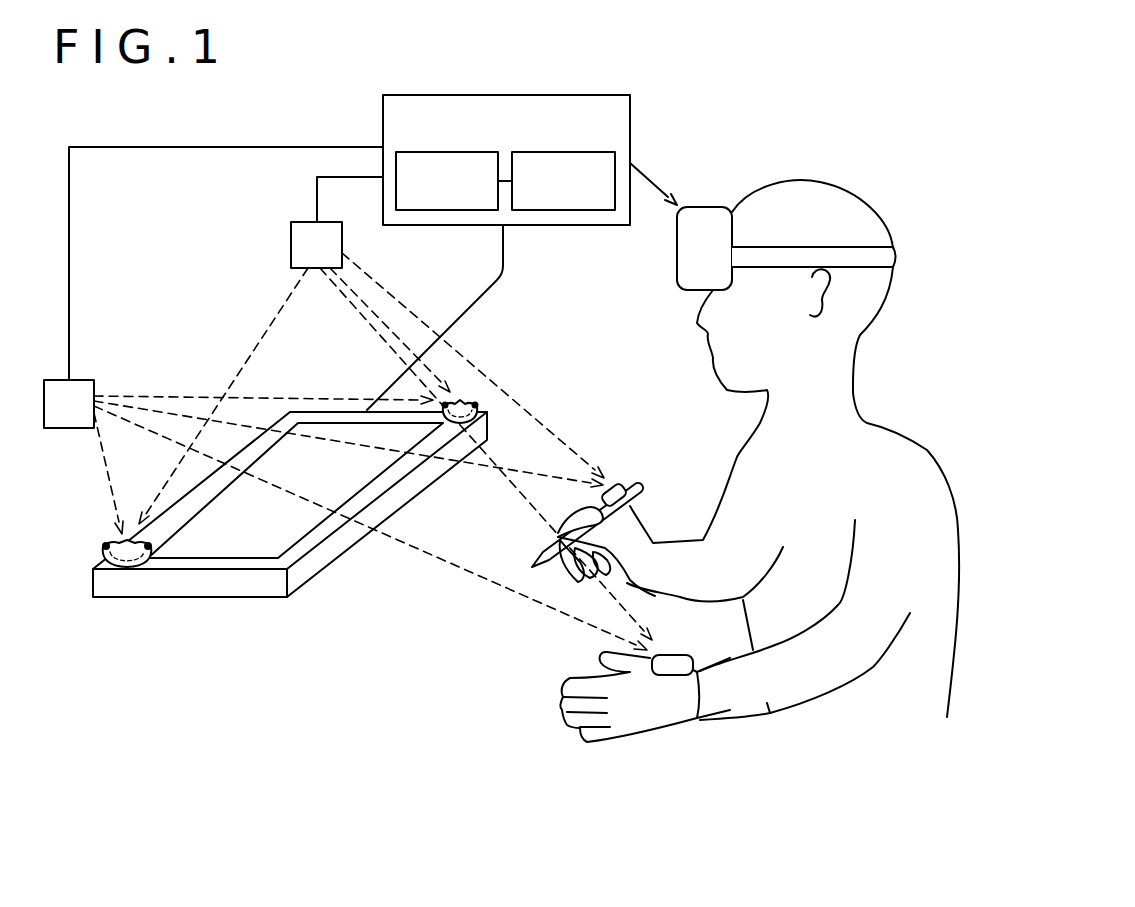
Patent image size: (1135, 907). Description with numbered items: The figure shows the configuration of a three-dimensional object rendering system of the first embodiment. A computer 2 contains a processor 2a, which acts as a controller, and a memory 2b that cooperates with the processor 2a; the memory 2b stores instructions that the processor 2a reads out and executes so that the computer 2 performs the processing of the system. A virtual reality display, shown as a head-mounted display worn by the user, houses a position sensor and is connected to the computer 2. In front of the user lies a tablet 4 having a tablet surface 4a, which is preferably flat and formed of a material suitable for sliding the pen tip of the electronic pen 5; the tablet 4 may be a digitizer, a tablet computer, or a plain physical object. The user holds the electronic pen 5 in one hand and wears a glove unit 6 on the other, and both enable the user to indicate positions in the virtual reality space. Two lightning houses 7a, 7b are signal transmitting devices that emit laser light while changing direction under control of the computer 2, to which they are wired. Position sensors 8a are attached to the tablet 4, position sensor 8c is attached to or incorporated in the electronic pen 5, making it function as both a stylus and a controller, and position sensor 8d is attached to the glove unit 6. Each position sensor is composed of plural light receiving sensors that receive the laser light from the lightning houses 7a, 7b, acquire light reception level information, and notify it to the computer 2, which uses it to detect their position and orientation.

The computer 2 is at (632, 120).
The processor 2a is at (448, 202).
The memory 2b is at (565, 202).
The tablet 4 is at (290, 499).
The tablet surface 4a is at (332, 430).
The electronic pen 5 is at (637, 484).
The glove unit 6 is at (638, 723).
The lightning house 7a is at (84, 378).
The lightning house 7b is at (297, 221).
The position sensor 8a is at (130, 541).
The position sensor 8c is at (617, 485).
The position sensor 8d is at (676, 655).